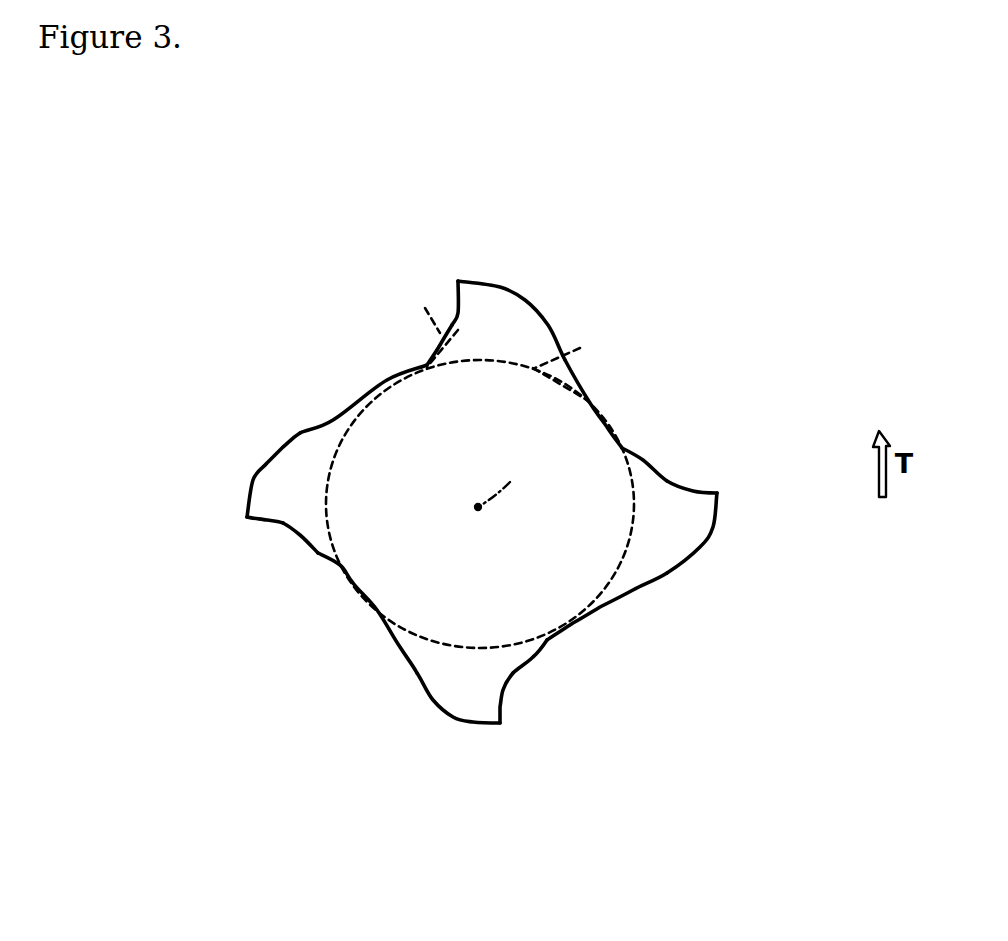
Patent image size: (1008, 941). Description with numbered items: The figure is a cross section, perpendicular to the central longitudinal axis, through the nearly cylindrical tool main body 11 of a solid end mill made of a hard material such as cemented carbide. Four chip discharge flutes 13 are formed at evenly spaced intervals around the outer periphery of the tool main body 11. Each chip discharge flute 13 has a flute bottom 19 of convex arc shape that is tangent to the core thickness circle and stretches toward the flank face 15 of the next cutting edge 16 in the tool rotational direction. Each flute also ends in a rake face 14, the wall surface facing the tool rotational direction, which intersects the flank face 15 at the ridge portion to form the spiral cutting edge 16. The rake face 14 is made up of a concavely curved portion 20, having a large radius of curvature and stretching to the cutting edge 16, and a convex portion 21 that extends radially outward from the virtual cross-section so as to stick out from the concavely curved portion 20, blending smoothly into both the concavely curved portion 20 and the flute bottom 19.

The tool main body 11 is at (641, 275).
The chip discharge flute 13 is at (347, 355).
The rake face 14 is at (485, 500).
The flank face 15 is at (497, 284).
The cutting edge 16 is at (458, 281).
The flute bottom 19 is at (388, 380).
The concavely curved portion 20 is at (328, 222).
The convex portion 21 is at (427, 353).